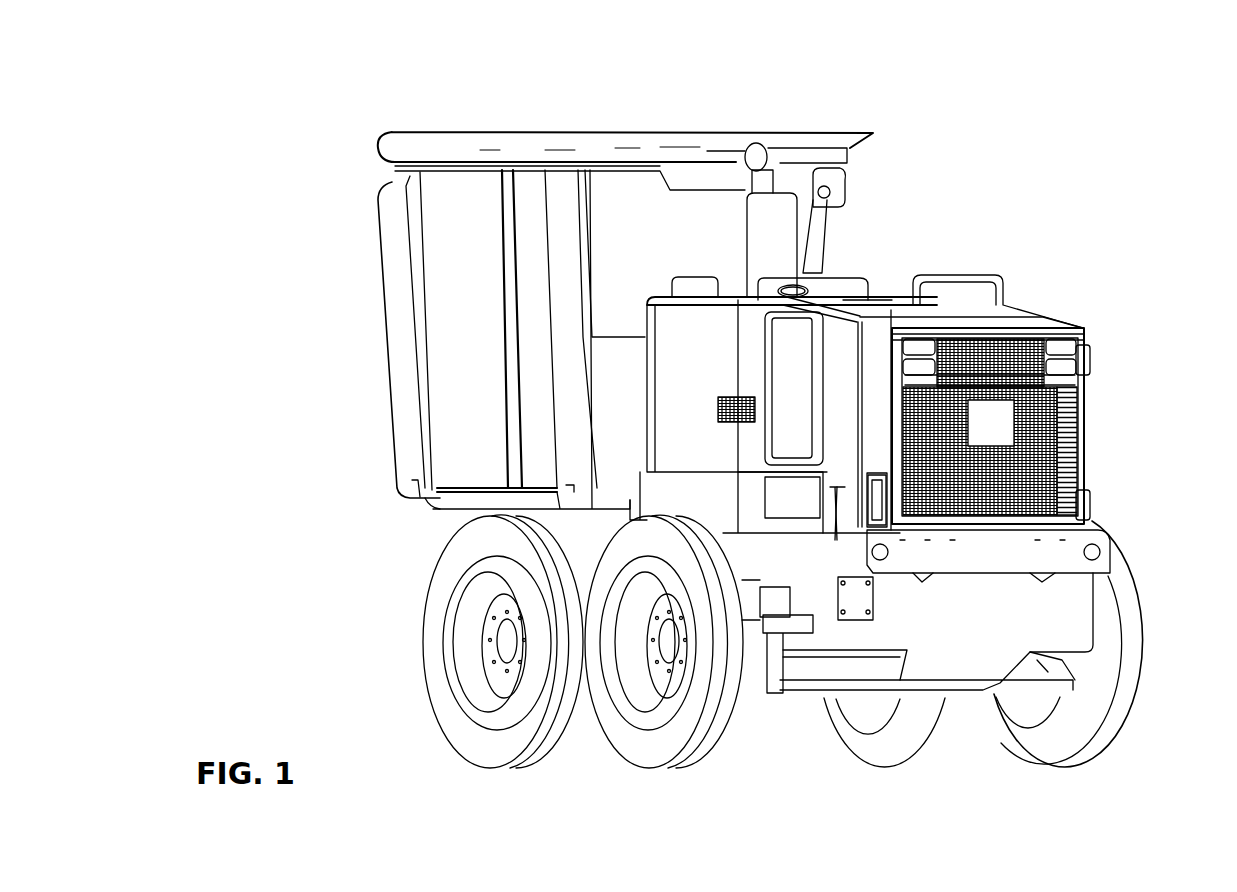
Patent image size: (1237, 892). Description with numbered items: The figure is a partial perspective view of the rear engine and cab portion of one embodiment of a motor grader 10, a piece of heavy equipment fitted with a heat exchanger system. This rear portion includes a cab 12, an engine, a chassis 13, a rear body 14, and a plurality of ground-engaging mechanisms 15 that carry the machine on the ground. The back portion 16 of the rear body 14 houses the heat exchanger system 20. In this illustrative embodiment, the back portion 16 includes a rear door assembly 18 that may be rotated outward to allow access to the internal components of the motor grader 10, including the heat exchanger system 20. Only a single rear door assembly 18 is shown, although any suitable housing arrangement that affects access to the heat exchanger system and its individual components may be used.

The motor grader 10 is at (1057, 143).
The cab 12 is at (603, 129).
The chassis 13 is at (884, 298).
The rear body 14 is at (1085, 230).
The ground-engaging mechanisms 15 is at (1110, 595).
The back portion 16 is at (950, 266).
The rear door assembly 18 is at (838, 490).
The heat exchanger system 20 is at (1087, 327).